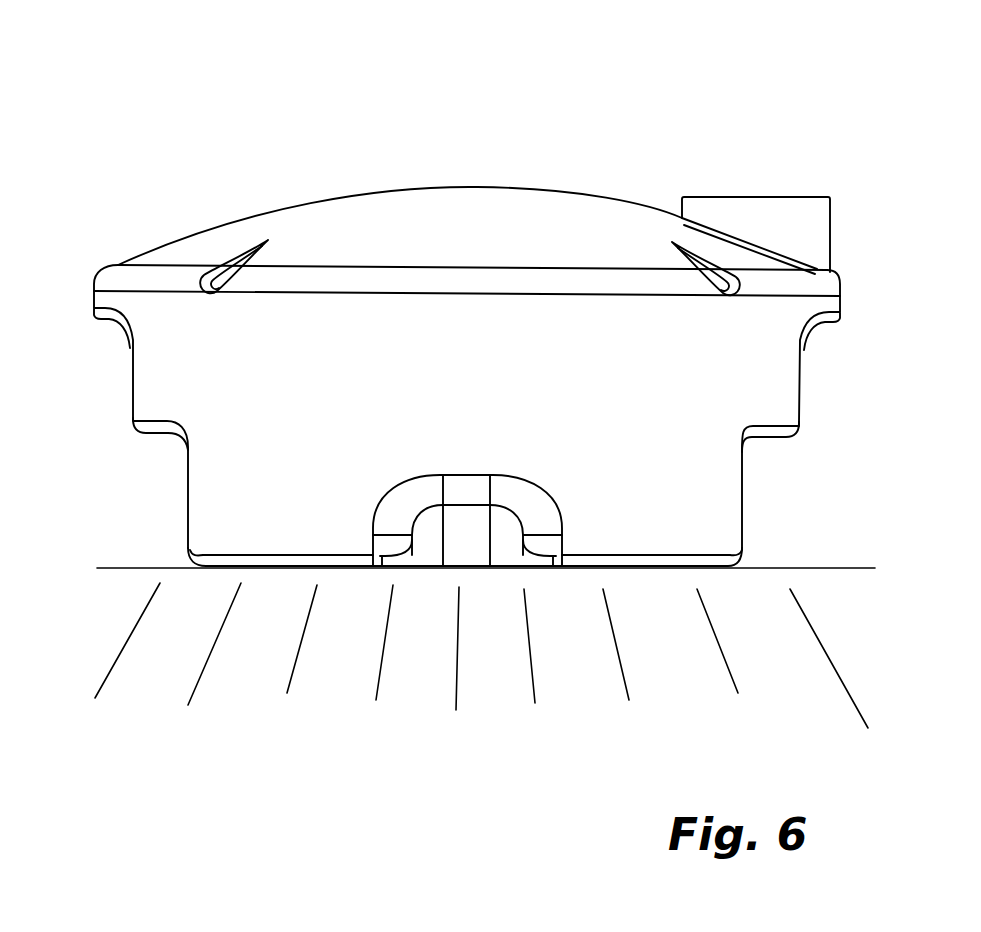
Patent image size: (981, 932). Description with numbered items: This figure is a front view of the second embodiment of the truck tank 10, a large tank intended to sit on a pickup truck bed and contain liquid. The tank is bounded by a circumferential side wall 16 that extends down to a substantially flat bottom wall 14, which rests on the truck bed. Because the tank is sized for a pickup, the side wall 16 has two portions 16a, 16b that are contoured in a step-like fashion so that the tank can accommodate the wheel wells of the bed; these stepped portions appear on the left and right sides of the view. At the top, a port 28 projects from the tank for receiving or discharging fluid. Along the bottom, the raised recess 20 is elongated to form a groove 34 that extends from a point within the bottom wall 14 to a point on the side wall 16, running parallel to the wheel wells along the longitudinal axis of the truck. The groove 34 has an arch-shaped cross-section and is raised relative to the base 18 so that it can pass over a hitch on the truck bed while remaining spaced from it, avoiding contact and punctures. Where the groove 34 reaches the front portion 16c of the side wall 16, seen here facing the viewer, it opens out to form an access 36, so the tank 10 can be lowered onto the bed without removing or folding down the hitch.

The truck tank 10 is at (548, 122).
The bottom wall 14 is at (323, 566).
The base 18 is at (465, 557).
The side wall 16 is at (462, 393).
The side wall portion 16a is at (800, 410).
The side wall portion 16b is at (133, 389).
The front portion of the side wall 16c is at (467, 304).
The raised recess 20 is at (517, 540).
The port 28 is at (797, 197).
The groove 34 is at (425, 545).
The access 36 is at (467, 520).